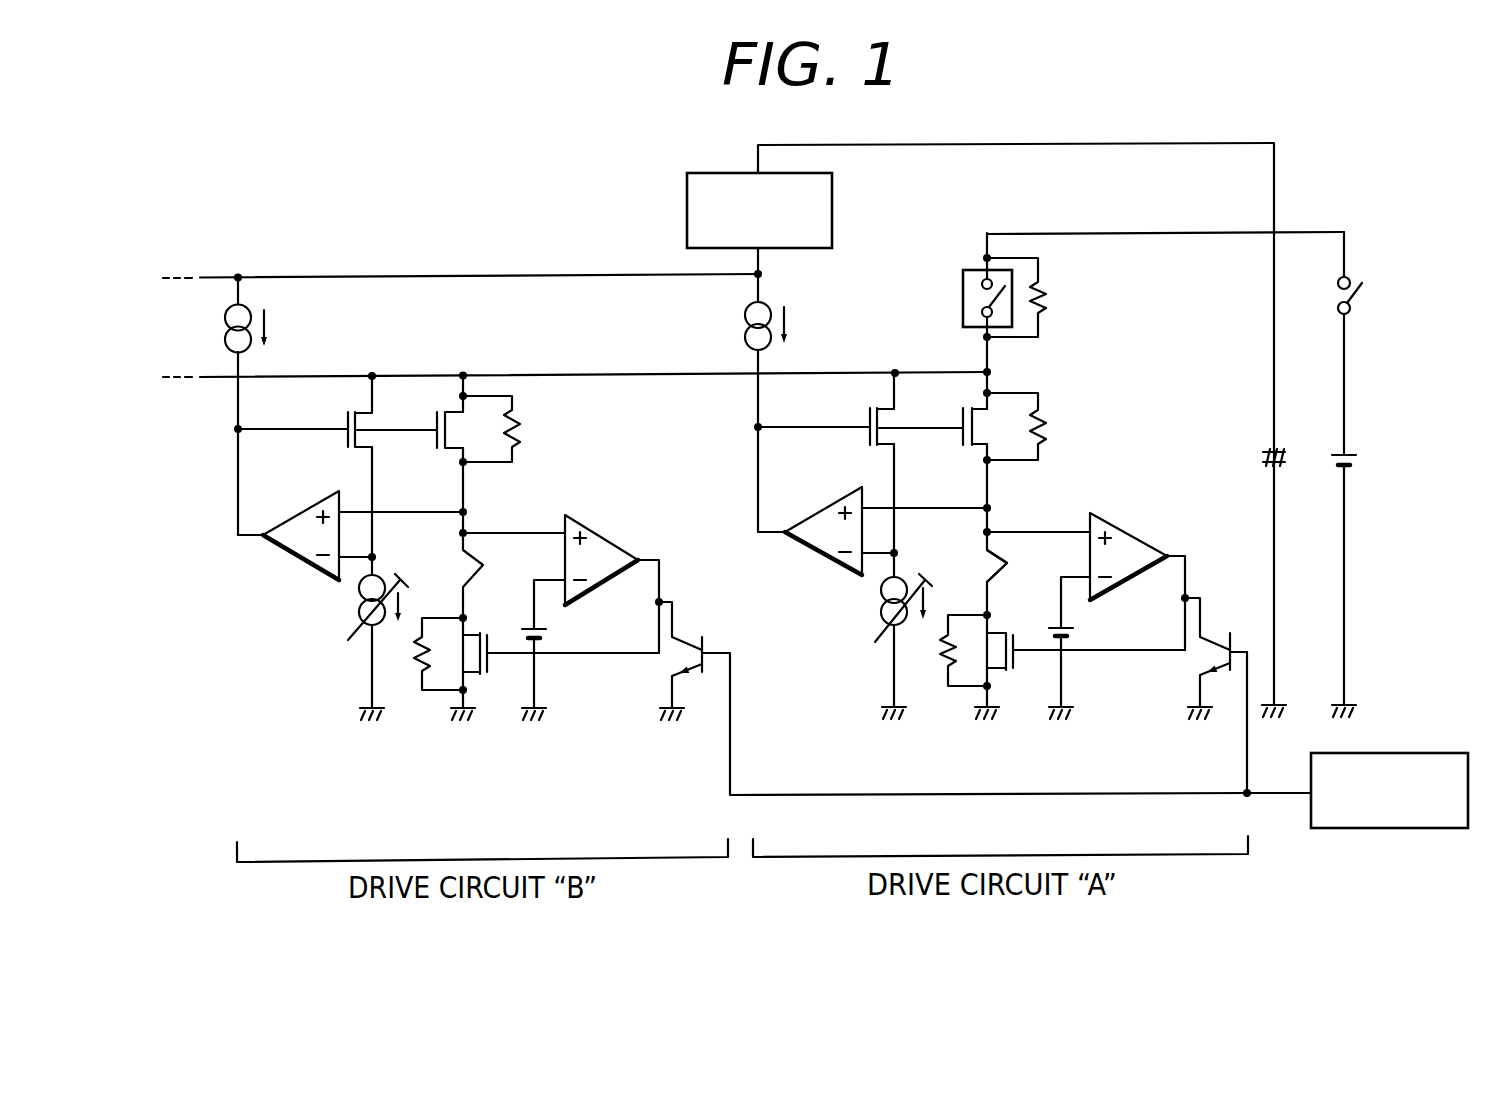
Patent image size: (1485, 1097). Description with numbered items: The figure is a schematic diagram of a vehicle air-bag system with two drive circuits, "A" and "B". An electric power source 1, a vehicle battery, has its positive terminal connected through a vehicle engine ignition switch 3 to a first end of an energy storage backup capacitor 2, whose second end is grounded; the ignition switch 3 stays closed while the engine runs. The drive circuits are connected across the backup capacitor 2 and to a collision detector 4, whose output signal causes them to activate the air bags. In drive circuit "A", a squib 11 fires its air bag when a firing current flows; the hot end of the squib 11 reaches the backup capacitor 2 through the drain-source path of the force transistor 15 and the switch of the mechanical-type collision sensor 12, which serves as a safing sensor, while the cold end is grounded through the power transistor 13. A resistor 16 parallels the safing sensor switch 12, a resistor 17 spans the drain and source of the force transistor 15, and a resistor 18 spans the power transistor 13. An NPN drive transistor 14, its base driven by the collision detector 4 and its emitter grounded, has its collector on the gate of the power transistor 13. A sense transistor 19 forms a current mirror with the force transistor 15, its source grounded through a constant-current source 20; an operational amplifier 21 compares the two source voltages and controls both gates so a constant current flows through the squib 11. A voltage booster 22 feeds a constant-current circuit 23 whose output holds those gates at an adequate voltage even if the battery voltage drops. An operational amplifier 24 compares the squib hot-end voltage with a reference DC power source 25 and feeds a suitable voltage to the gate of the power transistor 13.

The electric power source 1 is at (1352, 452).
The energy storage backup capacitor 2 is at (1281, 451).
The vehicle engine ignition switch 3 is at (1362, 296).
The collision detector 4 is at (1425, 752).
The squib 11 is at (1000, 555).
The mechanical-type collision sensor 12 is at (962, 278).
The power transistor 13 is at (1003, 672).
The drive transistor 14 is at (1232, 633).
The force transistor 15 is at (962, 412).
The resistor 16 is at (1044, 290).
The resistor 17 is at (1044, 427).
The resistor 18 is at (945, 672).
The sense transistor 19 is at (869, 410).
The constant-current source 20 is at (880, 605).
The operational amplifier 21 is at (828, 503).
The voltage booster 22 is at (832, 189).
The constant-current circuit 23 is at (745, 312).
The operational amplifier 24 is at (1135, 528).
The reference DC power source 25 is at (1075, 634).